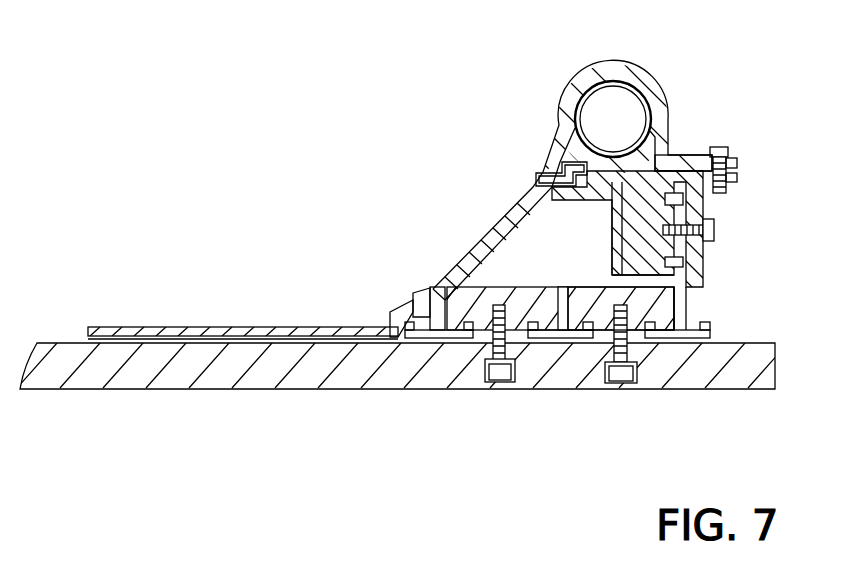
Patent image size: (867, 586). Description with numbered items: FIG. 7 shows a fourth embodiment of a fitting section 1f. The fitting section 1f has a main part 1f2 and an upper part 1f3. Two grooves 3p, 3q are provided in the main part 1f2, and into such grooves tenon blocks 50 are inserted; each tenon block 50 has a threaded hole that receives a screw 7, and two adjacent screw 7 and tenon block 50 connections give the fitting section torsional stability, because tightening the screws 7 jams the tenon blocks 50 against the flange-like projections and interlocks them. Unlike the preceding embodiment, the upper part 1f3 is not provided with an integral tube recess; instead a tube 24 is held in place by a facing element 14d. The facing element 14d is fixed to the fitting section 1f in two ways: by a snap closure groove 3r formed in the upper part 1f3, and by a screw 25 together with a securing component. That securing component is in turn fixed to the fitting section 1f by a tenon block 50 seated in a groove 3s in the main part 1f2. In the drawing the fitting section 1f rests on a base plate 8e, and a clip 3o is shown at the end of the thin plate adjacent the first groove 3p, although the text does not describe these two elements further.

The tube 24 is at (650, 88).
The facing element 14d is at (557, 135).
The snap closure groove 3r is at (541, 172).
The groove 3q is at (575, 296).
The groove 3p is at (450, 308).
The retaining clip 3o is at (424, 300).
The base plate 8e is at (280, 362).
The screw 7 is at (505, 372).
The tenon block 50 is at (653, 213).
The screw 25 is at (723, 151).
The fitting section 1f is at (717, 279).
The main part 1f2 is at (688, 296).
The upper part 1f3 is at (700, 157).
The groove 3s is at (675, 262).